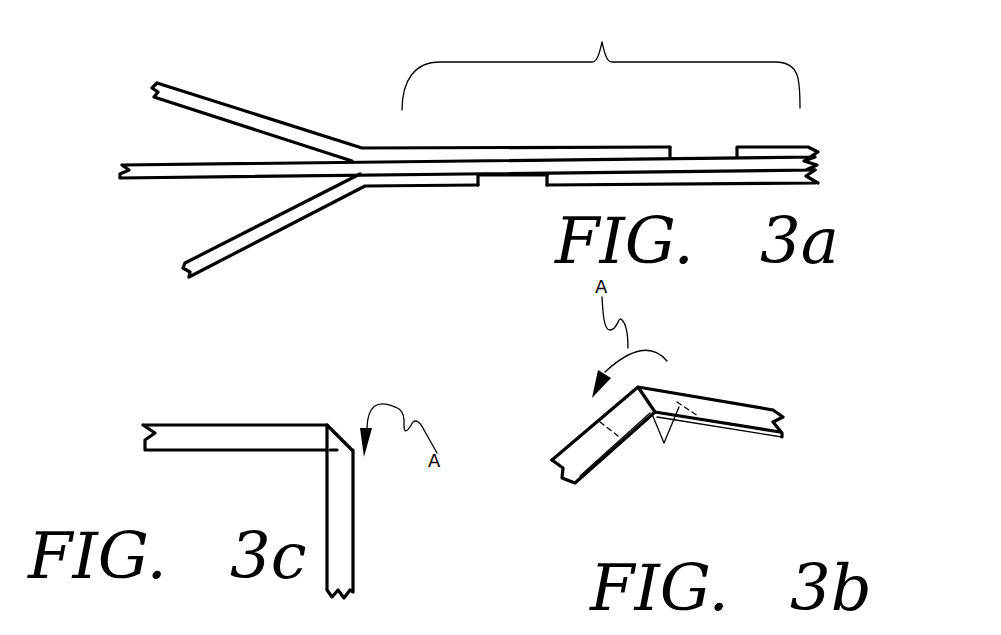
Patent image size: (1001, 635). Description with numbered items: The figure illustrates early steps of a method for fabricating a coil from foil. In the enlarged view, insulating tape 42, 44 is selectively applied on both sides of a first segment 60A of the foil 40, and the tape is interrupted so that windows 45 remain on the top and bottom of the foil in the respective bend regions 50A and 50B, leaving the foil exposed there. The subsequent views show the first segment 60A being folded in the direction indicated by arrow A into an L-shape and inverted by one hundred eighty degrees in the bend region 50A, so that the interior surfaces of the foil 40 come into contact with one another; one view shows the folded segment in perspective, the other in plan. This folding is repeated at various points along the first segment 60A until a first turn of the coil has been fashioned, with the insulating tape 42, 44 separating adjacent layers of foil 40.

In FIG. 3A, the foil 40 is at (118, 172).
In FIG. 3A, the insulating tape 42 is at (155, 88).
In FIG. 3B, the insulating tape 42 is at (573, 483).
In FIG. 3A, the insulating tape 44 is at (212, 266).
In FIG. 3A, the window 45 is at (678, 157).
In FIG. 3A, the bend region 50A is at (737, 157).
In FIG. 3C, the bend region 50A is at (338, 432).
In FIG. 3B, the bend region 50A is at (665, 444).
In FIG. 3A, the bend region 50B is at (503, 178).
In FIG. 3A, the first segment of foil 60A is at (601, 60).
In FIG. 3C, the first segment of foil 60A is at (350, 555).
In FIG. 3B, the first segment of foil 60A is at (683, 373).